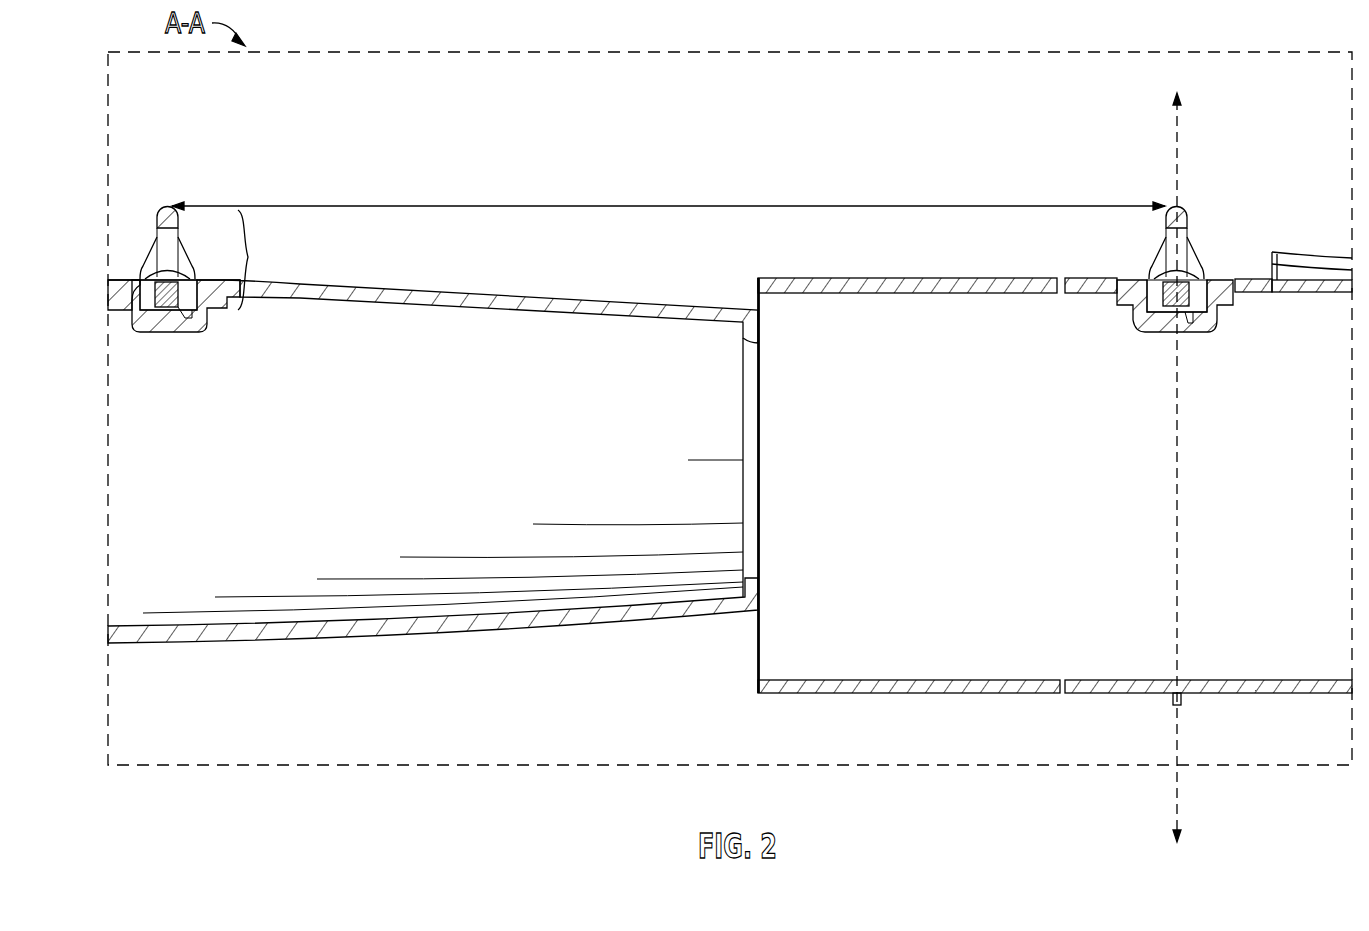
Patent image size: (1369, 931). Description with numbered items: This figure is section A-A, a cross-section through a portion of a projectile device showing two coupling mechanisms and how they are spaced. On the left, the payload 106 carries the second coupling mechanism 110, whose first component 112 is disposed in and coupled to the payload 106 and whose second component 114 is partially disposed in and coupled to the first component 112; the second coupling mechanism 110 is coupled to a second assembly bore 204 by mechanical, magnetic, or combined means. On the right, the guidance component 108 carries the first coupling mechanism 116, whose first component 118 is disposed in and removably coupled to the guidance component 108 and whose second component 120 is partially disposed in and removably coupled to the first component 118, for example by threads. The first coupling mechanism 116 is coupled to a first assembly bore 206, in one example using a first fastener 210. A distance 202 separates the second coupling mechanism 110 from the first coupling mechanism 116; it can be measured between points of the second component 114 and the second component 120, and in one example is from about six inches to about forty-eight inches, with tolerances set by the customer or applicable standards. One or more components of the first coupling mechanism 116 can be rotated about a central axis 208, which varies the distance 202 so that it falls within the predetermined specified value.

The payload 106 is at (310, 481).
The guidance component 108 is at (1352, 168).
The second coupling mechanism 110 is at (265, 260).
The first component 112 is at (125, 300).
The second component 114 is at (158, 242).
The first coupling mechanism 116 is at (1245, 330).
The first component 118 is at (1152, 290).
The second component 120 is at (1170, 242).
The distance 202 is at (573, 204).
The second assembly bore 204 is at (178, 332).
The first assembly bore 206 is at (1203, 332).
The central axis 208 is at (1178, 133).
The first fastener 210 is at (1180, 315).